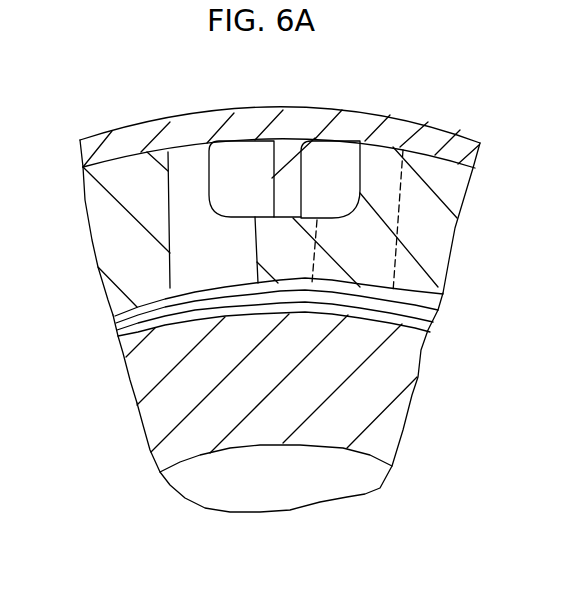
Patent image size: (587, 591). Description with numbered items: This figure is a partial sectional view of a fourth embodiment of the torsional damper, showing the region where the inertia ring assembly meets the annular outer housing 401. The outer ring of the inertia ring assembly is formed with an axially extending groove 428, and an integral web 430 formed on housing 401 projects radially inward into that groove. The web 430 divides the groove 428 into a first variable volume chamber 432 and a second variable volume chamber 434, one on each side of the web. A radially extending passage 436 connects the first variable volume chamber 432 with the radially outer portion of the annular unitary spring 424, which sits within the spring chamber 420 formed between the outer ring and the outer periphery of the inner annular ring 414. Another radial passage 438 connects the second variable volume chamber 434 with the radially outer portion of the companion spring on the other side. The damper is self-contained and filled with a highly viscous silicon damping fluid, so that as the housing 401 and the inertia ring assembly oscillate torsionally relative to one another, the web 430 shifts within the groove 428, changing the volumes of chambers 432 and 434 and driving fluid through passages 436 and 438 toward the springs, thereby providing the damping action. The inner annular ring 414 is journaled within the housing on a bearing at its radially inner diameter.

The annular outer housing 401 is at (142, 140).
The radially extending passage 436 is at (172, 197).
The integral web 430 is at (288, 182).
The first variable volume chamber 432 is at (260, 180).
The second variable volume chamber 434 is at (352, 180).
The axially extending groove 428 is at (315, 216).
The radial passage 438 is at (393, 237).
The spring chamber 420 is at (122, 319).
The annular unitary spring 424 is at (132, 323).
The inner annular ring 414 is at (160, 420).